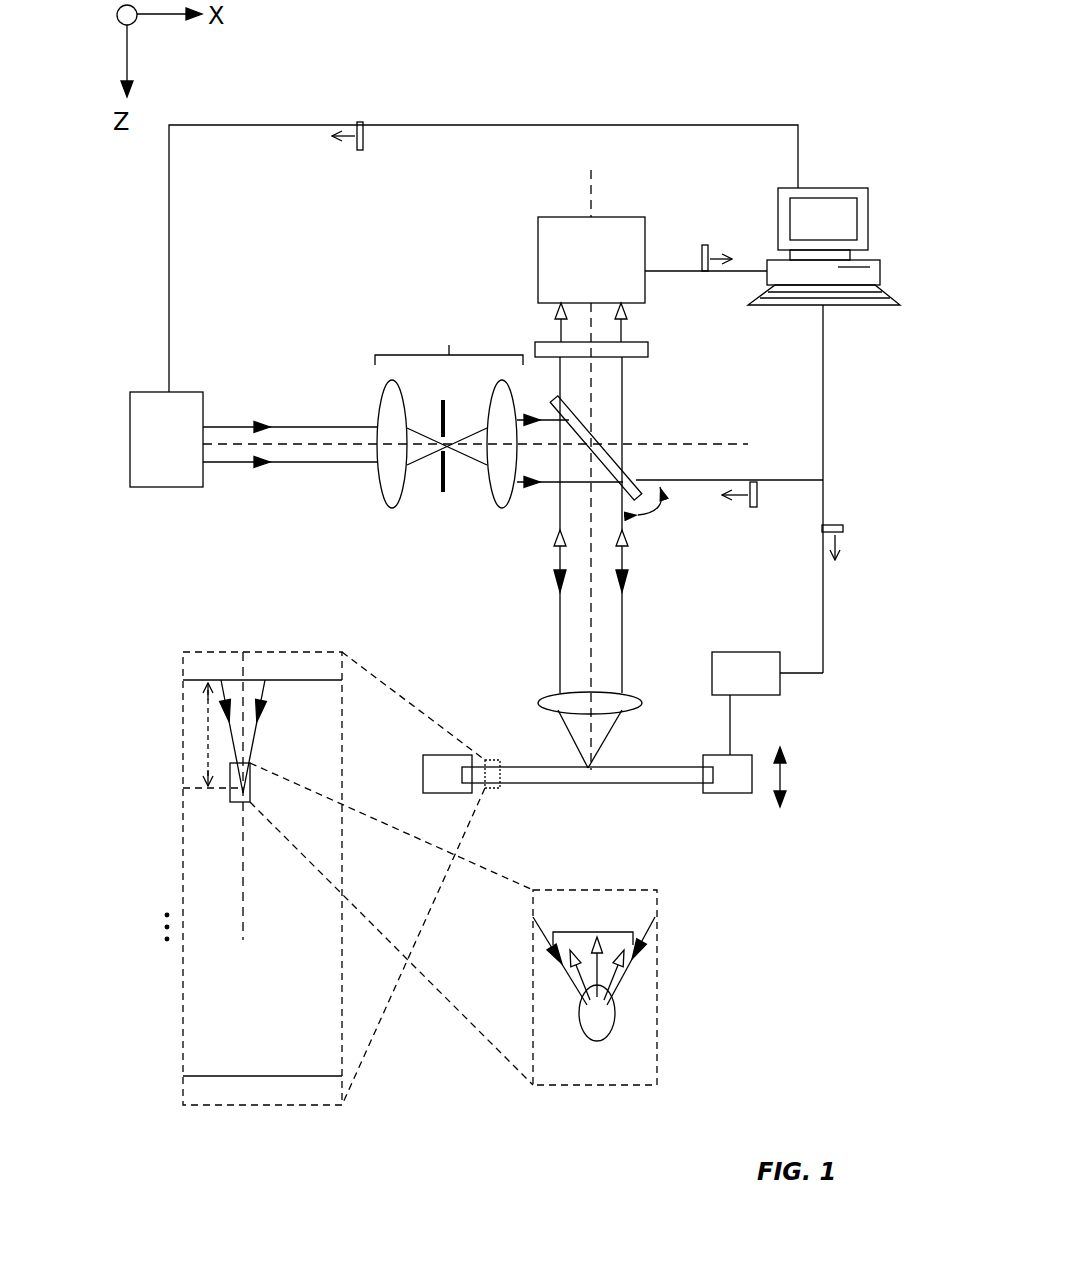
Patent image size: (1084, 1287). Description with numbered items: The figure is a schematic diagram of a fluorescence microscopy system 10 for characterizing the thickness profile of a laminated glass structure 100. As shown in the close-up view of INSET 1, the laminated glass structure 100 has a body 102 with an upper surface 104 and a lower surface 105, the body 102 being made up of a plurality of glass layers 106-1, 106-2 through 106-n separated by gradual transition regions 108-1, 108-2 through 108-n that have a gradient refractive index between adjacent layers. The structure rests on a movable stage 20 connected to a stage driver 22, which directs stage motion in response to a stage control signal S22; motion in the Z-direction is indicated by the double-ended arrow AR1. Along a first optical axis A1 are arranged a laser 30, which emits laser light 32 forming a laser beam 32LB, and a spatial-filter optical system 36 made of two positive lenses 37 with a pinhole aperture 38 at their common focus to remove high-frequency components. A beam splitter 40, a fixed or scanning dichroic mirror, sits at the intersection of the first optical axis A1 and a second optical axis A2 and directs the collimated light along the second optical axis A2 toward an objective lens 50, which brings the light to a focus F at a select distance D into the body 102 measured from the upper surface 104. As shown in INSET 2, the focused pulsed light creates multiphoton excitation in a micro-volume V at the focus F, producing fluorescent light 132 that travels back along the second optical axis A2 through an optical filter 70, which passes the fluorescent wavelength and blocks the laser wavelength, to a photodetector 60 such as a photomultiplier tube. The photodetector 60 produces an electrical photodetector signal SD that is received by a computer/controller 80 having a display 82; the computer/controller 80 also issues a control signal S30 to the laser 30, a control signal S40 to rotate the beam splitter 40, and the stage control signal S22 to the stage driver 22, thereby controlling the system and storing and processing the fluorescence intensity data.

The fluorescence microscopy system 10 is at (737, 45).
The movable stage 20 is at (710, 755).
The stage driver 22 is at (762, 688).
The laser 30 is at (182, 457).
The laser light 32 is at (262, 420).
The laser beam 32LB is at (308, 416).
The spatial-filter optical system 36 is at (449, 339).
The positive lenses 37 is at (502, 511).
The pinhole aperture 38 is at (443, 398).
The beam splitter 40 is at (582, 422).
The objective lens 50 is at (540, 700).
The photodetector 60 is at (606, 277).
The optical filter 70 is at (652, 352).
The computer/controller 80 is at (878, 225).
The display 82 is at (835, 208).
The laminated glass structure 100 is at (637, 752).
The body 102 is at (627, 777).
The upper surface 104 is at (668, 755).
The lower surface 105 is at (667, 784).
The glass layer 106-1 is at (168, 680).
The gradual transition region 108-1 is at (168, 745).
The glass layer 106-2 is at (168, 783).
The gradual transition region 108-2 is at (168, 862).
The glass layer 106-n is at (168, 970).
The gradual transition region 108-n is at (168, 1005).
The fluorescent light 132 is at (552, 320).
The control signal S30 is at (364, 148).
The control signal S40 is at (758, 505).
The stage control signal S22 is at (840, 525).
The electrical photodetector signal SD is at (708, 248).
The first optical axis A1 is at (728, 447).
The second optical axis A2 is at (595, 192).
The double-ended arrow AR1 is at (787, 808).
The distance D is at (213, 735).
The focus F is at (580, 783).
The micro-volume V is at (605, 1023).
The close-up inset view INSET 1 is at (223, 617).
The close-up view INSET 2 is at (680, 950).